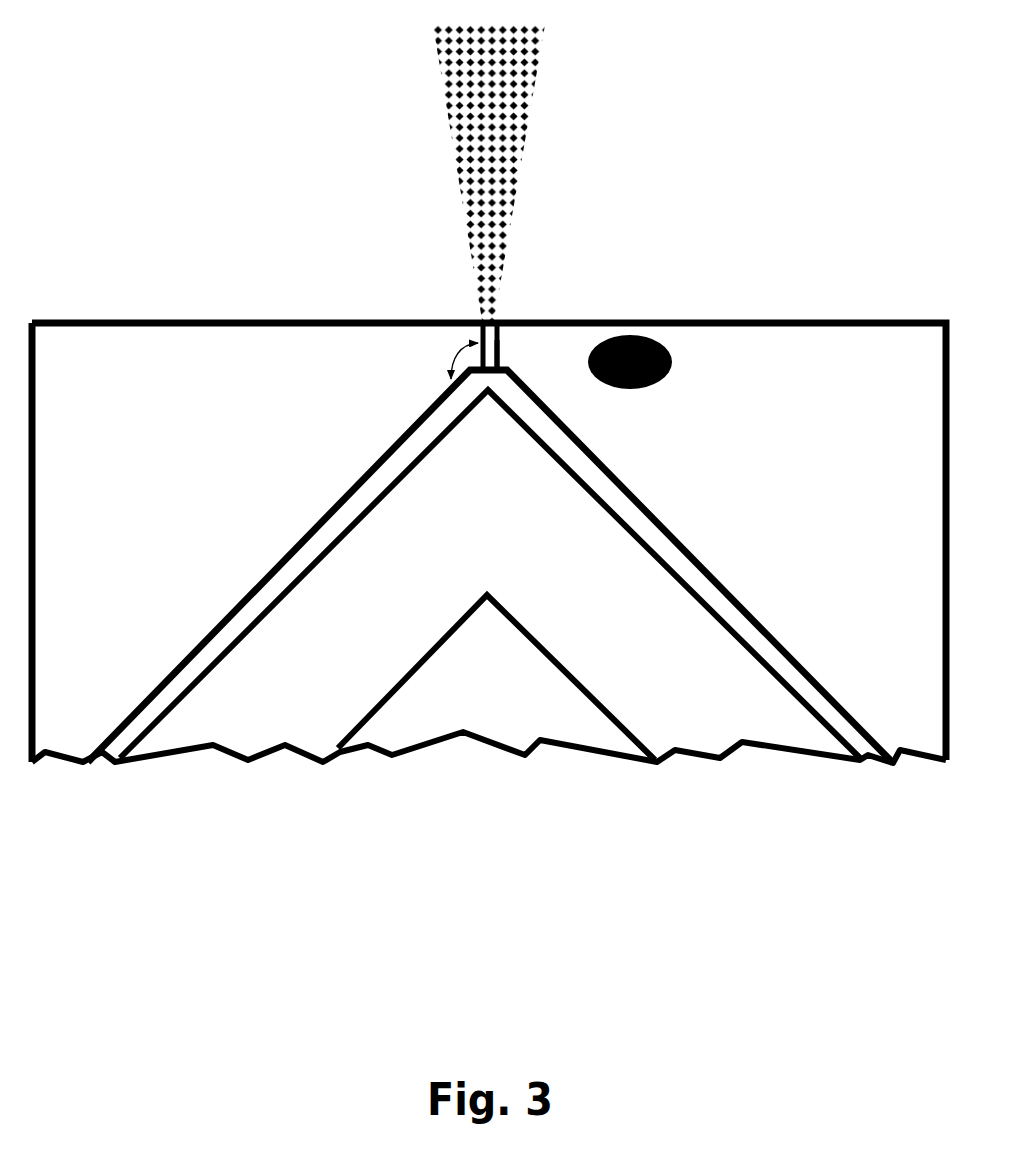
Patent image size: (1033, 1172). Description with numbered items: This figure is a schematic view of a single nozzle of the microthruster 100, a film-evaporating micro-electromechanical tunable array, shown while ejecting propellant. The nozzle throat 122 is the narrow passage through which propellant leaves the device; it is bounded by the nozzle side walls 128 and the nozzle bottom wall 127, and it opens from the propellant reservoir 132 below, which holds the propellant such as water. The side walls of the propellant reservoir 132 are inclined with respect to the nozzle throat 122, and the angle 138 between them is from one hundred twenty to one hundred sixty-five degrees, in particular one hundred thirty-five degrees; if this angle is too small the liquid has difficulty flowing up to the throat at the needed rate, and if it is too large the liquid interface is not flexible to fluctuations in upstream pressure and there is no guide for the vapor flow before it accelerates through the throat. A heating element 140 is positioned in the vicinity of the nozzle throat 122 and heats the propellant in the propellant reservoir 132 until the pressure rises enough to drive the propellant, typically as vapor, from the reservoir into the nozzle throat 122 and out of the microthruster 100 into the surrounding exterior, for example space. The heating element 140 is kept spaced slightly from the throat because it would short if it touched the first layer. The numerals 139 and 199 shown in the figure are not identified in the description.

The microthruster 100 is at (489, 479).
The nozzle throat 122 is at (489, 498).
The nozzle bottom wall 127 is at (498, 345).
The nozzle side wall 128 is at (497, 338).
The propellant reservoir 132 is at (687, 550).
The angle 138 is at (441, 358).
The laser beam 139 is at (525, 126).
The heating element 140 is at (370, 619).
The defect 199 is at (667, 357).